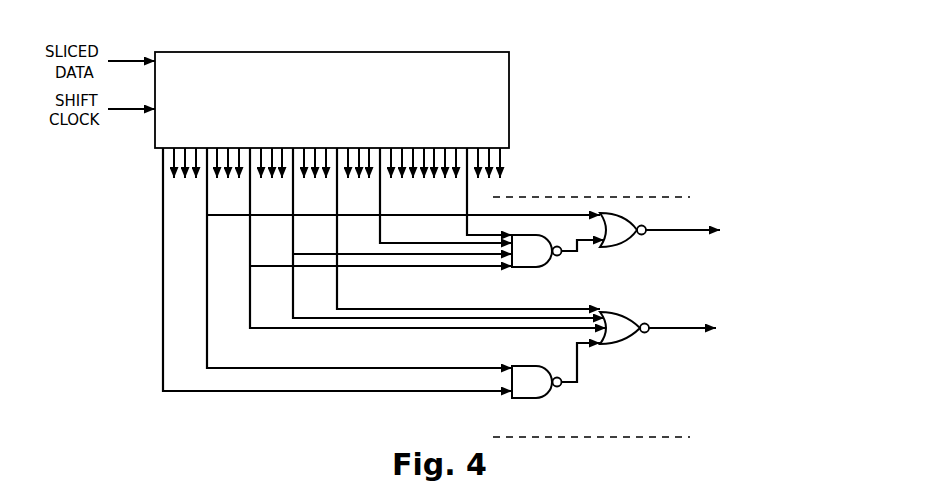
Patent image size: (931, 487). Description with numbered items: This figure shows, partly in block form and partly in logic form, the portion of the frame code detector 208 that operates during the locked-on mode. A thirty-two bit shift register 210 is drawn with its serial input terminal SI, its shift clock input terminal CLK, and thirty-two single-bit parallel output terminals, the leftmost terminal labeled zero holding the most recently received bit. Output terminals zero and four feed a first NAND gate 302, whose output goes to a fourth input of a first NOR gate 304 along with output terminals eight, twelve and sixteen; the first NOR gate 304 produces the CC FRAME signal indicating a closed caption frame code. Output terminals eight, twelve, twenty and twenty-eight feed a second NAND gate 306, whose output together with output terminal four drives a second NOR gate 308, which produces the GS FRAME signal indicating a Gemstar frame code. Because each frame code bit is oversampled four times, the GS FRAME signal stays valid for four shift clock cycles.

The 32 bit shift register 210 is at (233, 37).
The frame code detector 208 is at (605, 186).
The first NAND gate 302 is at (536, 419).
The first NOR gate 304 is at (636, 364).
The second NAND gate 306 is at (542, 278).
The second NOR gate 308 is at (634, 268).